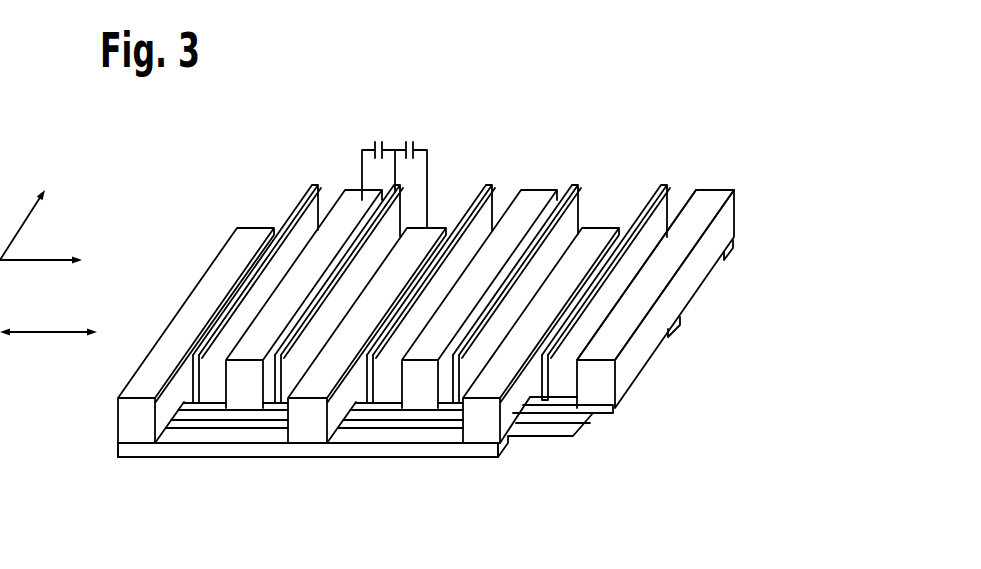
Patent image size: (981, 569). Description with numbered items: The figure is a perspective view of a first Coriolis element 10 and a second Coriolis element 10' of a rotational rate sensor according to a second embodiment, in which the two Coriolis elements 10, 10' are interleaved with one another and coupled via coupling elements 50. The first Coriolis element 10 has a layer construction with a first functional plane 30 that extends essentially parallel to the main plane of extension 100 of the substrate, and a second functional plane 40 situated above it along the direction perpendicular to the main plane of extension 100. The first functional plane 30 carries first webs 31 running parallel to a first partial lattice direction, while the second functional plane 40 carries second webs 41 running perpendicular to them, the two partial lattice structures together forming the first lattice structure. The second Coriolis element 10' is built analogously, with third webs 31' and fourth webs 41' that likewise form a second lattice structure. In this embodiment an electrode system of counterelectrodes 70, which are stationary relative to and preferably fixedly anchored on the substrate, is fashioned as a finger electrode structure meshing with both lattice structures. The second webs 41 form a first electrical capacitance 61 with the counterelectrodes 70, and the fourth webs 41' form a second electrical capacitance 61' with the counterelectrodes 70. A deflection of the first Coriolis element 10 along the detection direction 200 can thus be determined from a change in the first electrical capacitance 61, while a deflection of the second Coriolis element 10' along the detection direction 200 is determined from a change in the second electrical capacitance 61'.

The first Coriolis element 10 is at (461, 287).
The second Coriolis element 10' is at (655, 243).
The first functional plane 30 is at (612, 408).
The first webs 31 is at (268, 476).
The third webs 31' is at (309, 468).
The second functional plane 40 is at (625, 377).
The second webs 41 is at (297, 362).
The fourth webs 41' is at (367, 383).
The coupling elements 50 is at (210, 405).
The first electrical capacitance 61 is at (376, 133).
The second electrical capacitance 61' is at (417, 146).
The counterelectrodes 70 is at (360, 224).
The main plane of extension 100 is at (41, 227).
The detection direction 200 is at (48, 352).